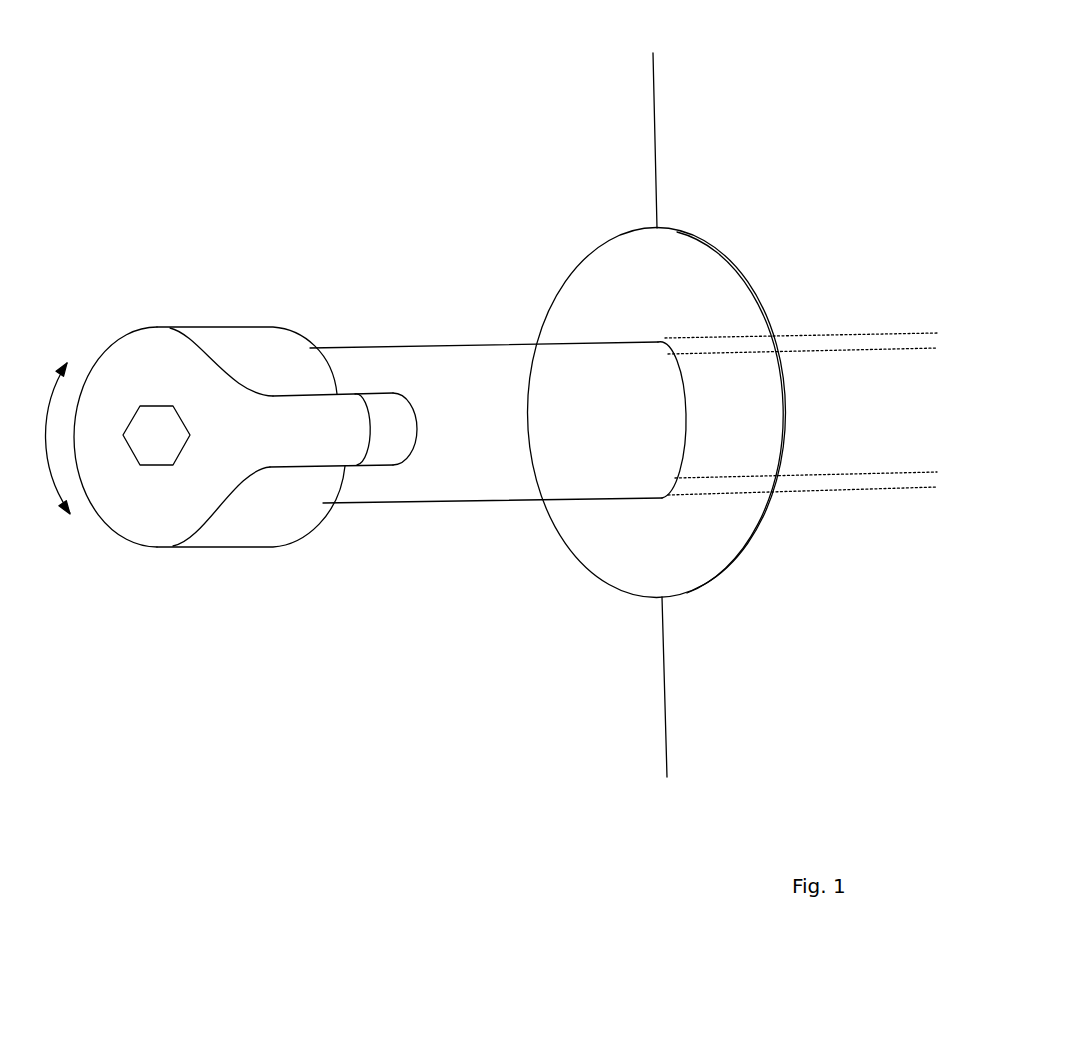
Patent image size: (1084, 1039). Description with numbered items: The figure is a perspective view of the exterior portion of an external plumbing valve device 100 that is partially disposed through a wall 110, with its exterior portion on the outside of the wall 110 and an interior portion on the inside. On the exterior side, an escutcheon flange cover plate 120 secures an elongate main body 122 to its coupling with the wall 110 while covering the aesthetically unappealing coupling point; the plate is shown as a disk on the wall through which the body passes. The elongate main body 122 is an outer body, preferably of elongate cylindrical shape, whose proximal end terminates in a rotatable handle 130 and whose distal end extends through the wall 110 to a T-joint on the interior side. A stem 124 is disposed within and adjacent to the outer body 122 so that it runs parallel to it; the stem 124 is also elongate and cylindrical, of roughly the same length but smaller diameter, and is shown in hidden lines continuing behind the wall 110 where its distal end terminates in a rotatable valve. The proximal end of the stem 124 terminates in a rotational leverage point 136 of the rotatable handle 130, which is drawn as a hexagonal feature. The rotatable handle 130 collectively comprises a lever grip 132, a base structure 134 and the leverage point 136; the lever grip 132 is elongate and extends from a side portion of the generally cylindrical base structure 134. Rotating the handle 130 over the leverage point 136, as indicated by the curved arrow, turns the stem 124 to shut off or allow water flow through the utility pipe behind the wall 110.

The external plumbing valve device 100 is at (262, 793).
The wall 110 is at (657, 100).
The escutcheon flange cover plate 120 is at (648, 252).
The elongate main body 122 is at (715, 338).
The stem 124 is at (908, 347).
The rotatable handle 130 is at (114, 244).
The lever grip 132 is at (385, 438).
The base structure 134 is at (260, 517).
The rotational leverage point 136 is at (140, 464).